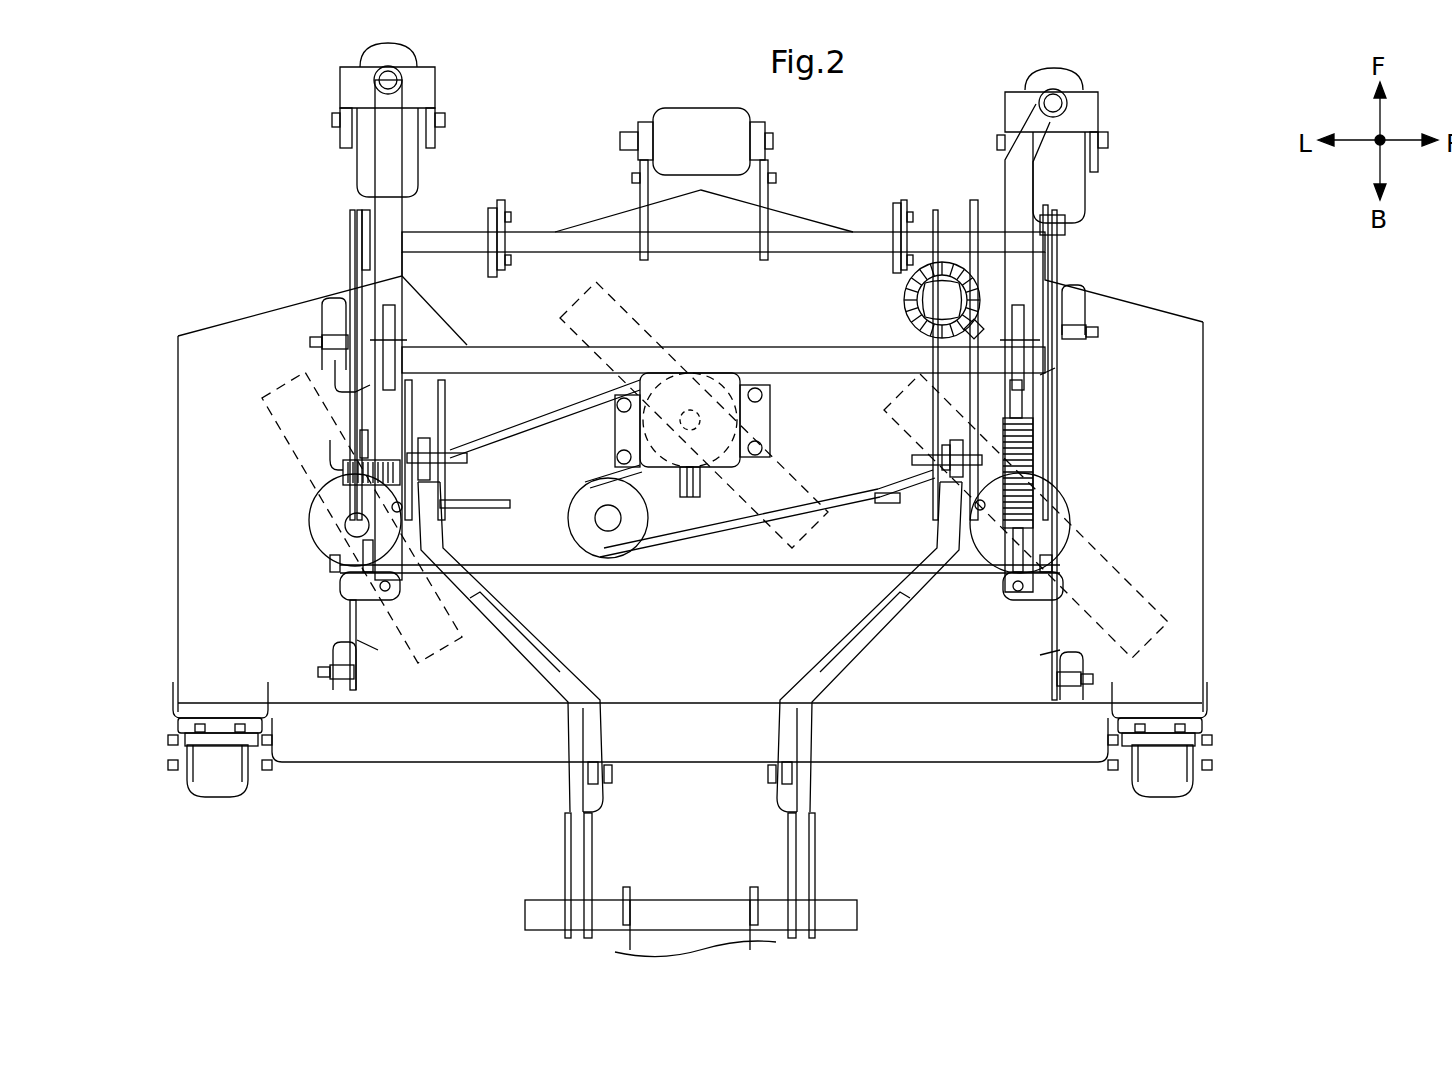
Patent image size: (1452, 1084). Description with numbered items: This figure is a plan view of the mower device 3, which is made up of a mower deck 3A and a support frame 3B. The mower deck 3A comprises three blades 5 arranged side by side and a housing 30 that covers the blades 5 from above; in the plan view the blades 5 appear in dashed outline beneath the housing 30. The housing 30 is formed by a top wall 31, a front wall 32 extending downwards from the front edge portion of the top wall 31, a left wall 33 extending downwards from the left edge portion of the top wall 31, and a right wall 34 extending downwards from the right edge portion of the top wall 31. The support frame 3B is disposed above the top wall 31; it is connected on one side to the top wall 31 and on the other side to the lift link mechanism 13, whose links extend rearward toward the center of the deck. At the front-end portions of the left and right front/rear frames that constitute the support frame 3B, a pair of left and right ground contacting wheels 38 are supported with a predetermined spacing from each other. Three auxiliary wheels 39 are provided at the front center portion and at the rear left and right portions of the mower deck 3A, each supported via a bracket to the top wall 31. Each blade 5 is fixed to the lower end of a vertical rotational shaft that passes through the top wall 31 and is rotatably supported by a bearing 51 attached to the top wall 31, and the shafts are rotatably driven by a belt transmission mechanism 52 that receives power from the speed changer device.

The mower device 3 is at (1232, 507).
The mower deck 3A is at (1206, 447).
The support frame 3B is at (1017, 198).
The blade 5 is at (615, 322).
The lift link mechanism 13 is at (878, 630).
The housing 30 is at (1228, 378).
The top wall 31 is at (1130, 355).
The front wall 32 is at (258, 310).
The left wall 33 is at (172, 510).
The right wall 34 is at (1205, 573).
The ground contacting wheel 38 is at (365, 150).
The auxiliary wheel 39 is at (707, 130).
The bearing 51 is at (720, 380).
The belt transmission mechanism 52 is at (705, 540).